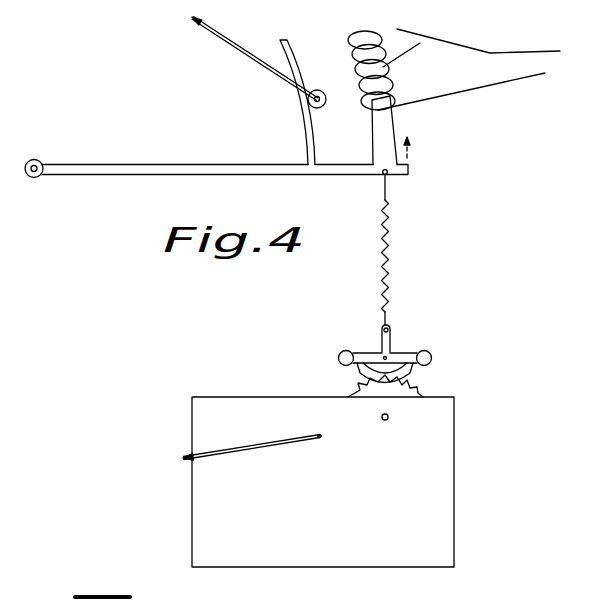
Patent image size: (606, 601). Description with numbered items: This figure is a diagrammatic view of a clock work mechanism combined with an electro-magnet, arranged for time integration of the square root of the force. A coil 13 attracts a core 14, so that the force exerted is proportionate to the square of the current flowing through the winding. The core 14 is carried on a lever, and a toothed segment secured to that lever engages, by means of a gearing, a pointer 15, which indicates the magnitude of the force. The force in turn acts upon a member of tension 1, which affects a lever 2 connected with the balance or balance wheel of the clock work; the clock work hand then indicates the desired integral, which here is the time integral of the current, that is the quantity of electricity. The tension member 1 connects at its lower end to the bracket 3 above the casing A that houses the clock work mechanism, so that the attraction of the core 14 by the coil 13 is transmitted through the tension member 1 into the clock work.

The member of tension 1 is at (390, 250).
The lever 2 is at (390, 333).
The bracket 3 is at (397, 352).
The coil 13 is at (427, 37).
The core 14 is at (388, 121).
The pointer 15 is at (250, 55).
The casing A is at (425, 422).